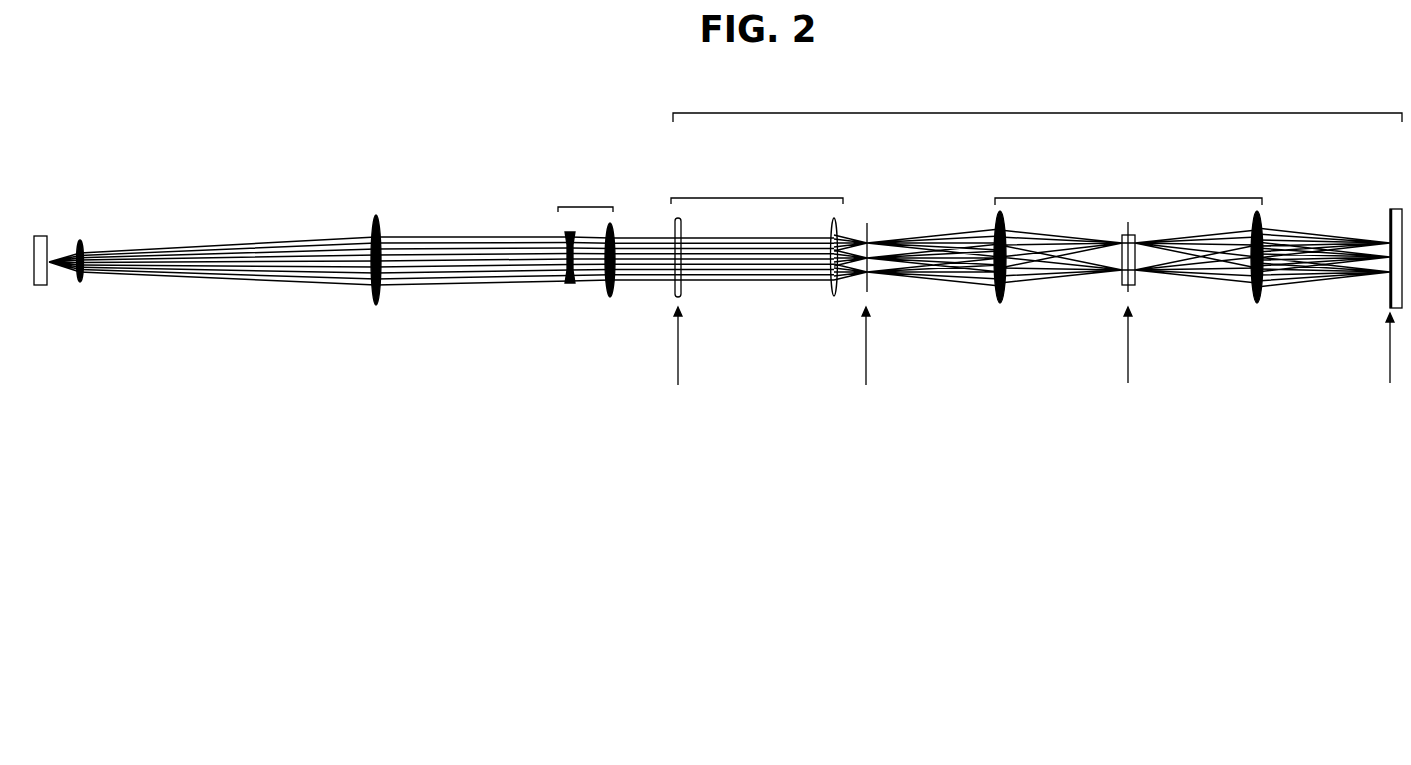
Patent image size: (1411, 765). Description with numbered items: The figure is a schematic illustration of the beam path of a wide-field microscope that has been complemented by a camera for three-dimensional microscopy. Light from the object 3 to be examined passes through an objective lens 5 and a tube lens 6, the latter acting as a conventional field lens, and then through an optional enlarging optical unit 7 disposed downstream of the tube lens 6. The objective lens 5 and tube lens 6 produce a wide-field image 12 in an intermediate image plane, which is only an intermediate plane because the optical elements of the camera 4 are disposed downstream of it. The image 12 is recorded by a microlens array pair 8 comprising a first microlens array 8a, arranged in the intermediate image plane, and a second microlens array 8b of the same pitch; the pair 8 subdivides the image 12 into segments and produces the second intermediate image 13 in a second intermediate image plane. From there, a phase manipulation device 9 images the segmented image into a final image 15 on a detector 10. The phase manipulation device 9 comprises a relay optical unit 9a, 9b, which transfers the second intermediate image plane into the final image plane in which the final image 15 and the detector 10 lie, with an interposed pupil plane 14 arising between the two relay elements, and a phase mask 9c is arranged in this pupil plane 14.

The object 3 is at (42, 286).
The camera 4 is at (1038, 113).
The objective lens 5 is at (82, 240).
The tube lens 6 is at (376, 215).
The enlarging optical unit 7 is at (585, 207).
The microlens array pair 8 is at (757, 198).
The first microlens array 8a is at (682, 288).
The second microlens array 8b is at (832, 297).
The phase manipulation device 9 is at (1128, 198).
The relay optical unit 9a is at (1003, 302).
The relay optical unit 9b is at (1255, 303).
The phase mask 9c is at (1135, 270).
The detector 10 is at (1394, 209).
The wide-field image 12 is at (680, 373).
The second intermediate image 13 is at (867, 331).
The pupil plane 14 is at (1127, 373).
The final image 15 is at (1388, 376).